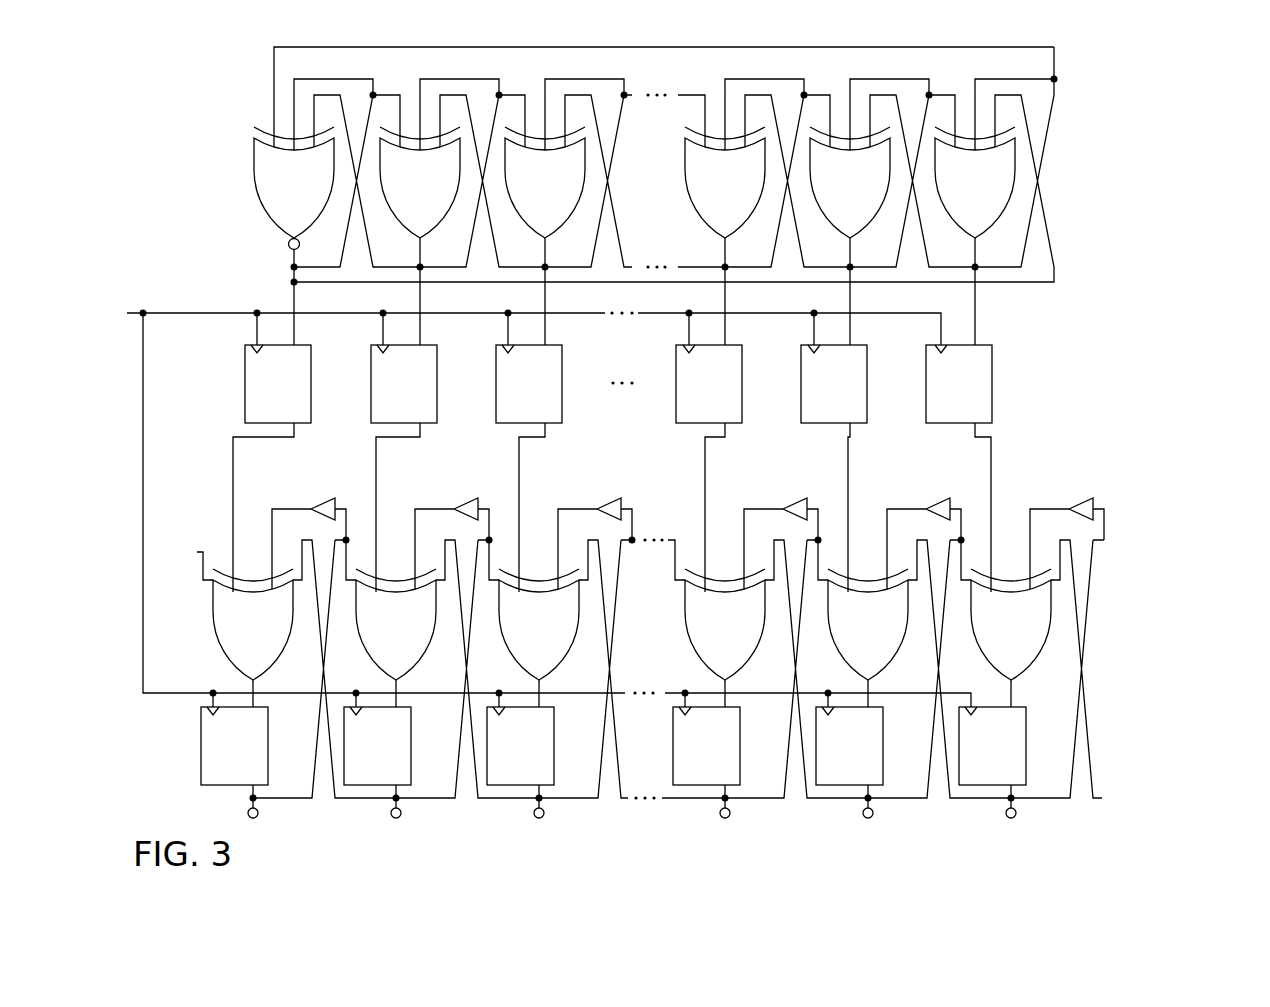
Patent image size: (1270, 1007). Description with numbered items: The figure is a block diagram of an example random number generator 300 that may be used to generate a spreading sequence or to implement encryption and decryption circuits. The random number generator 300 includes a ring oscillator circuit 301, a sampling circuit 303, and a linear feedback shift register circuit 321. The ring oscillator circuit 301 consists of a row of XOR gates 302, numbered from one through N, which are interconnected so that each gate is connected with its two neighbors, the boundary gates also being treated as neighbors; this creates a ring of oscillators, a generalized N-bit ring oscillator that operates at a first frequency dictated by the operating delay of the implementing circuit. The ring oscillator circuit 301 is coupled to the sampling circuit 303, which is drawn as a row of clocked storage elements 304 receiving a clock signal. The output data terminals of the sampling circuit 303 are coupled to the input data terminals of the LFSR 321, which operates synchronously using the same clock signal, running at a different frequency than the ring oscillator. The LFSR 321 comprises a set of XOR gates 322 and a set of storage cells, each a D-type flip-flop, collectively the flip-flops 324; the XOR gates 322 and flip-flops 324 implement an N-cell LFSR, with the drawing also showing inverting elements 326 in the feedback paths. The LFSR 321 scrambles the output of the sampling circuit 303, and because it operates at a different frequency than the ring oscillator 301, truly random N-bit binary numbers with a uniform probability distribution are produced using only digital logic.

The random number generator 300 is at (160, 145).
The ring oscillator circuit 301 is at (1083, 47).
The XOR gates 302 is at (312, 191).
The sampling circuit 303 is at (1053, 338).
The D flip-flops 304 is at (311, 380).
The linear feedback shift register circuit 321 is at (1143, 533).
The XOR gates 322 is at (271, 631).
The flip-flops 324 is at (268, 770).
The inverters 326 is at (1077, 504).